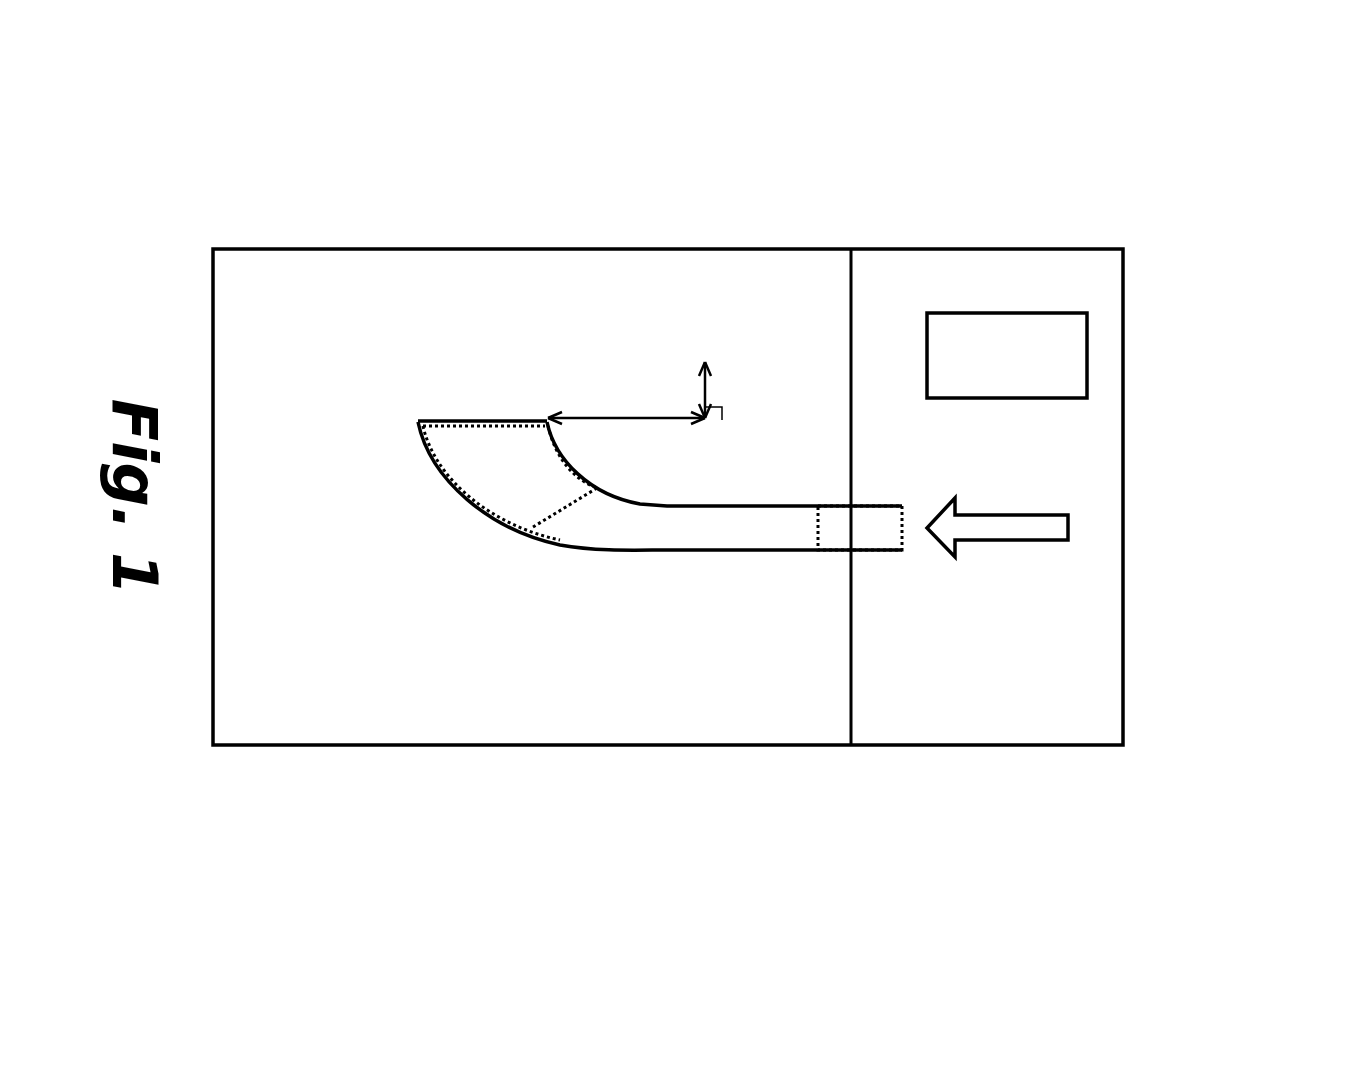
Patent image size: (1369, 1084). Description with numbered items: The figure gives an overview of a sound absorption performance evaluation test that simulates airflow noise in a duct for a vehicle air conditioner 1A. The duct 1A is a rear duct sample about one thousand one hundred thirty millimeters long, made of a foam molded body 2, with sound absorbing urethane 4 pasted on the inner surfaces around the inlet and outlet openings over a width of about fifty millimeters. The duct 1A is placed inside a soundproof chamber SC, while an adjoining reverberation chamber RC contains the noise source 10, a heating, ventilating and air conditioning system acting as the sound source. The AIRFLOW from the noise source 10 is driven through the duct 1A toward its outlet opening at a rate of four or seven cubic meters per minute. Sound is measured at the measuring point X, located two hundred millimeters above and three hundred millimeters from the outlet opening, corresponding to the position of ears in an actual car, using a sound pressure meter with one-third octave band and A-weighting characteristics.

The duct for a vehicle air conditioner 1A is at (660, 614).
The foam molded body 2 is at (651, 553).
The sound absorbing urethane 4 is at (760, 652).
The noise source 10 is at (1087, 358).
The soundproof chamber SC is at (371, 733).
The reverberation chamber RC is at (1005, 733).
The measuring point X is at (705, 353).
The airflow direction AIRFLOW is at (1068, 527).